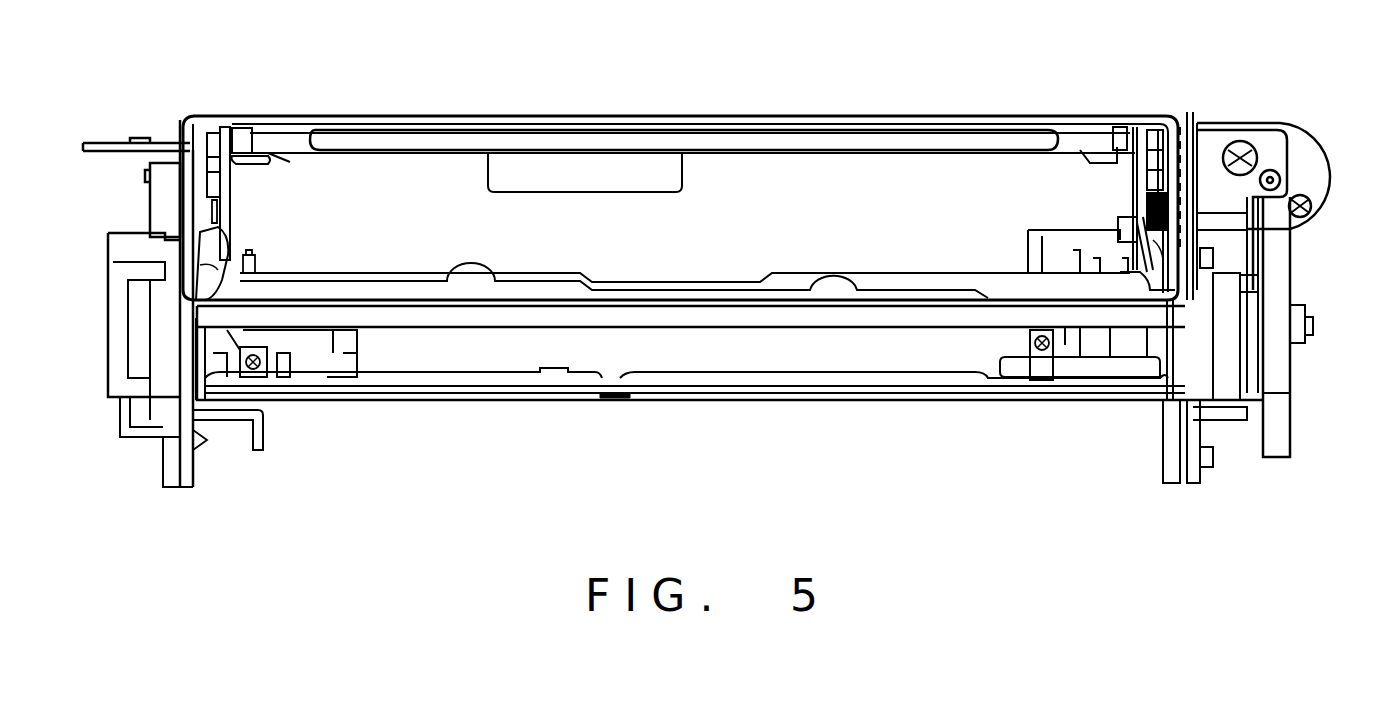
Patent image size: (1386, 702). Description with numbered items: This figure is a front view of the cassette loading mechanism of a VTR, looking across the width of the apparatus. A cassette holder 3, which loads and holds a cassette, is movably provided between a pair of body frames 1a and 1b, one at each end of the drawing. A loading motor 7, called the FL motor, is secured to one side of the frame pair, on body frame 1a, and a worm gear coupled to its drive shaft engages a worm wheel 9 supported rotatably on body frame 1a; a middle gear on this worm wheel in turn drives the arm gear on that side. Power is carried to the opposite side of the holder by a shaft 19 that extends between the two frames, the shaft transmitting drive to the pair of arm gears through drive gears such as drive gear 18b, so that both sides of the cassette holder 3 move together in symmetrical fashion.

The body frame 1a is at (1170, 116).
The body frame 1b is at (180, 133).
The cassette holder 3 is at (487, 116).
The loading motor 7 is at (1325, 165).
The worm wheel 9 is at (1290, 270).
The drive gear 18b is at (137, 318).
The shaft 19 is at (611, 327).